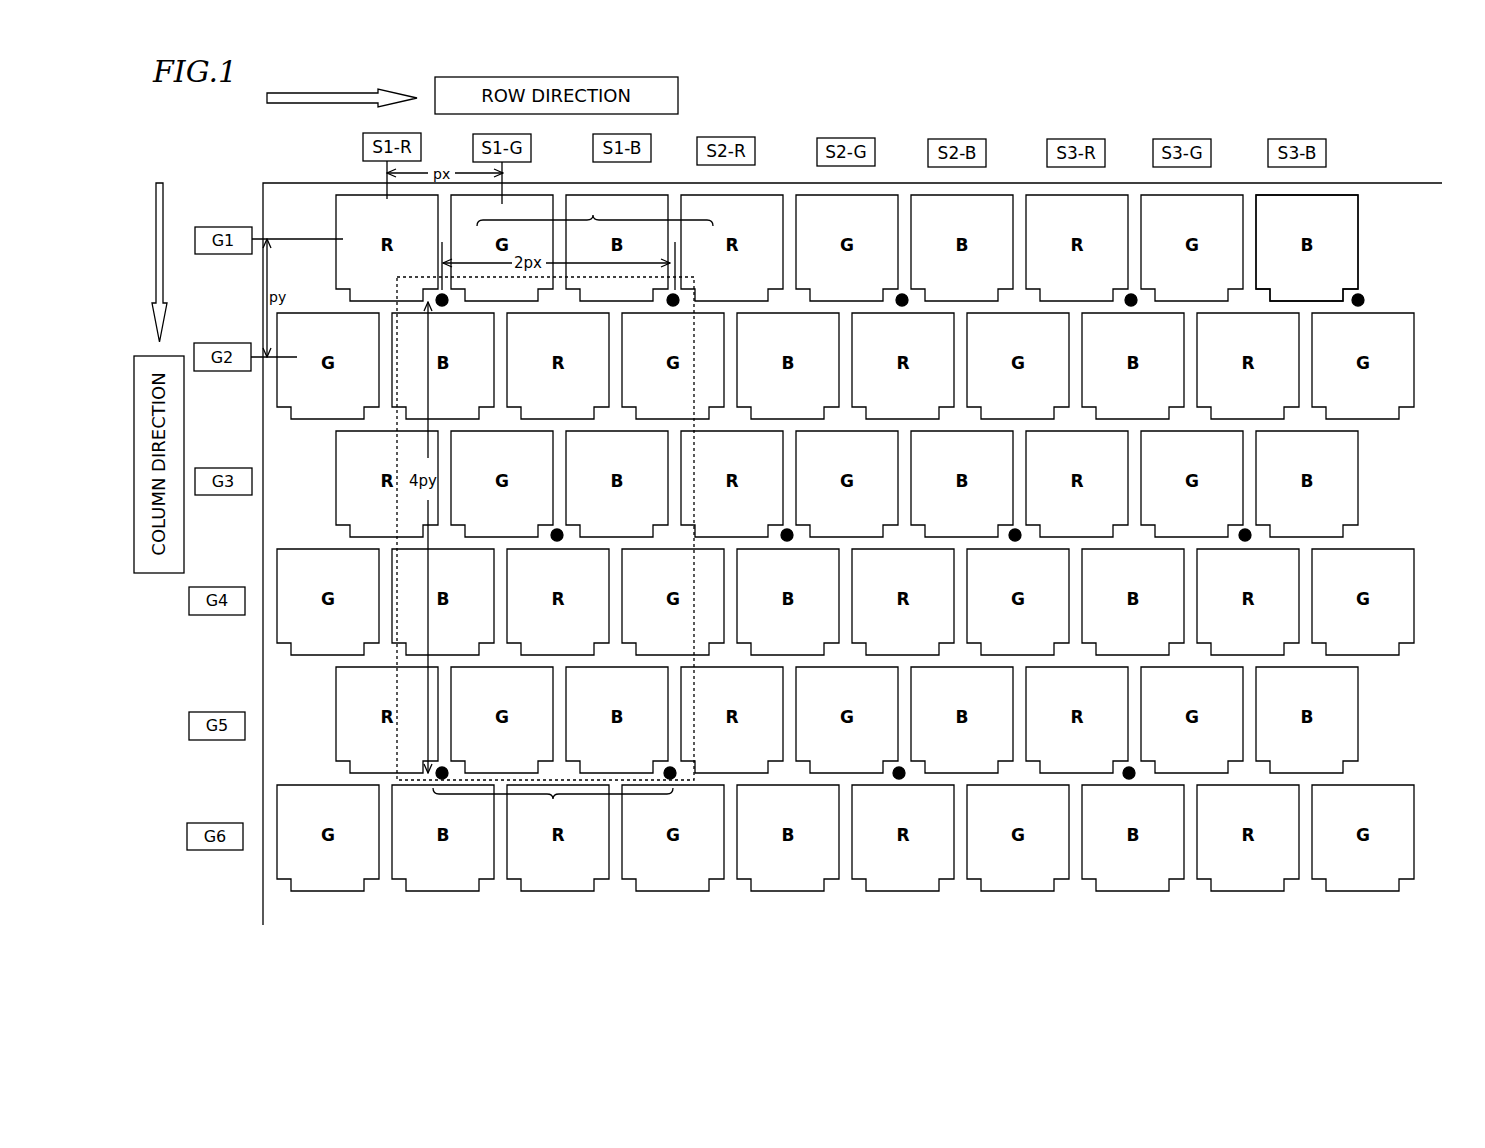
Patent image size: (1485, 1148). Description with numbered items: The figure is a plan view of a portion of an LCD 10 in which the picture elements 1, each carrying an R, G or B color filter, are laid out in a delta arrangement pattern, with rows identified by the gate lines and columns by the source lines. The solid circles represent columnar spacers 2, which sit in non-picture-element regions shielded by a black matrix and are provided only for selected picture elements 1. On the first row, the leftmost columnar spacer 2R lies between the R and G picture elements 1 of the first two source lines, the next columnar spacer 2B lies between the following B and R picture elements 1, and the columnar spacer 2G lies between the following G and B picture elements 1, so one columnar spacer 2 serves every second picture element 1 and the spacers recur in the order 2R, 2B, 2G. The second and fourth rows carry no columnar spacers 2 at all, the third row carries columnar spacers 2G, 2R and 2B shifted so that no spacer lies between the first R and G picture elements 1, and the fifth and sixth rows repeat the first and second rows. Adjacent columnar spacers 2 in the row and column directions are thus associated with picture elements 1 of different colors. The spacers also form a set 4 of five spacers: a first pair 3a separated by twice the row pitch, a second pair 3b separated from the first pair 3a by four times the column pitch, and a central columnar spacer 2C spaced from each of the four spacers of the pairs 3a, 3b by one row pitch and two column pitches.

The picture element 1 is at (1344, 266).
The columnar spacer 2 is at (1365, 299).
The columnar spacer between R and G picture elements 2R is at (1131, 768).
The columnar spacer between G and B picture elements 2G is at (901, 768).
The columnar spacer between B and R picture elements 2B is at (672, 768).
The central columnar spacer 2C is at (560, 530).
The first pair of columnar spacers 3a is at (595, 214).
The second pair of columnar spacers 3b is at (553, 804).
The spacer set 4 is at (651, 277).
The LCD 10 is at (1374, 155).